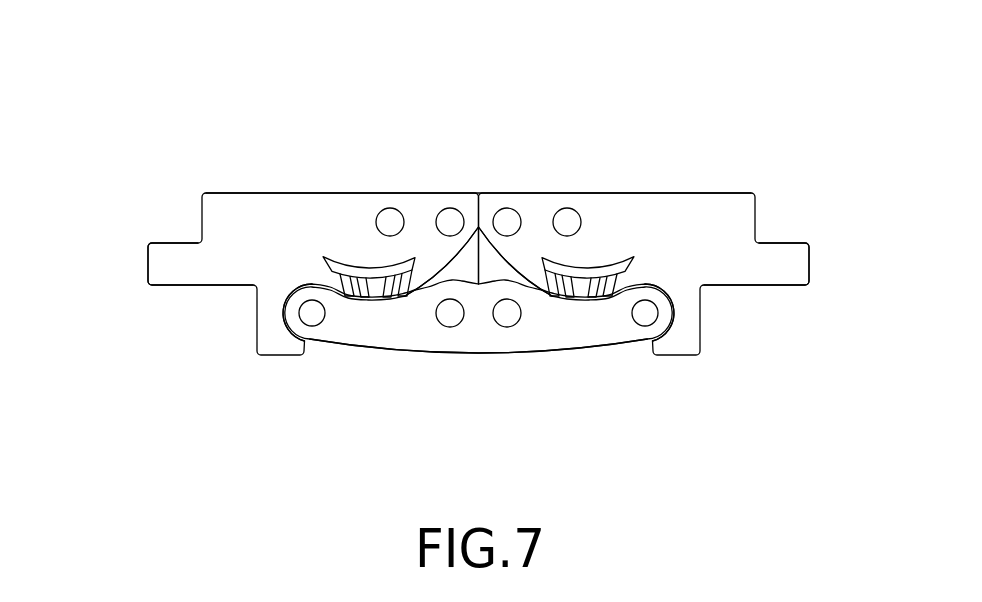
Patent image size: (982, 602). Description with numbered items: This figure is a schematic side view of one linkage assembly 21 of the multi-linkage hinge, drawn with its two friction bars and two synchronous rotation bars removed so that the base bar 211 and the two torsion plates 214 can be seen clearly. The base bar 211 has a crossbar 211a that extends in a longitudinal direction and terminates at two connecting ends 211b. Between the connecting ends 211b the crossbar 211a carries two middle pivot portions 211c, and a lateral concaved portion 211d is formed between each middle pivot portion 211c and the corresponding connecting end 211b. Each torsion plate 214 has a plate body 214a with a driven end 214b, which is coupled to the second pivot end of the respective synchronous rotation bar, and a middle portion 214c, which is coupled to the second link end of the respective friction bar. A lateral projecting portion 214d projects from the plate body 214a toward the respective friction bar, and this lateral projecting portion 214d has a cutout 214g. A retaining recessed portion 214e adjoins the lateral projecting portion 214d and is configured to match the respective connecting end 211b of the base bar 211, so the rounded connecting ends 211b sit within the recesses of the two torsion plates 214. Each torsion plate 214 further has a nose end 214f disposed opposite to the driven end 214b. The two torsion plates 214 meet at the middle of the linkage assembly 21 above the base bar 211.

The linkage assembly 21 is at (617, 127).
The torsion plate 214 is at (200, 215).
The plate body 214a is at (258, 207).
The driven end 214b is at (448, 208).
The middle portion 214c is at (390, 208).
The lateral projecting portion 214d is at (385, 296).
The retaining recessed portion 214e is at (286, 302).
The nose end 214f is at (167, 267).
The cutout 214g is at (373, 276).
The base bar 211 is at (582, 370).
The crossbar 211a is at (490, 340).
The connecting end 211b is at (300, 320).
The middle pivot portion 211c is at (452, 320).
The lateral concaved portion 211d is at (403, 296).